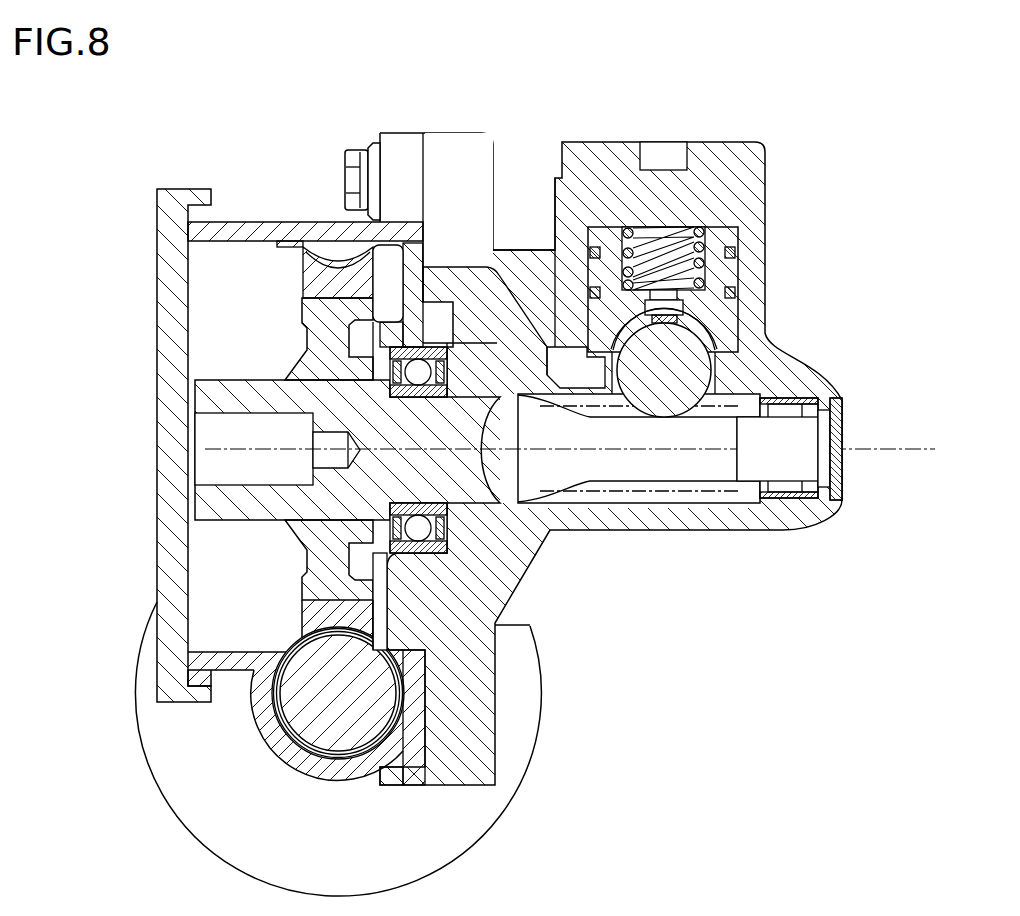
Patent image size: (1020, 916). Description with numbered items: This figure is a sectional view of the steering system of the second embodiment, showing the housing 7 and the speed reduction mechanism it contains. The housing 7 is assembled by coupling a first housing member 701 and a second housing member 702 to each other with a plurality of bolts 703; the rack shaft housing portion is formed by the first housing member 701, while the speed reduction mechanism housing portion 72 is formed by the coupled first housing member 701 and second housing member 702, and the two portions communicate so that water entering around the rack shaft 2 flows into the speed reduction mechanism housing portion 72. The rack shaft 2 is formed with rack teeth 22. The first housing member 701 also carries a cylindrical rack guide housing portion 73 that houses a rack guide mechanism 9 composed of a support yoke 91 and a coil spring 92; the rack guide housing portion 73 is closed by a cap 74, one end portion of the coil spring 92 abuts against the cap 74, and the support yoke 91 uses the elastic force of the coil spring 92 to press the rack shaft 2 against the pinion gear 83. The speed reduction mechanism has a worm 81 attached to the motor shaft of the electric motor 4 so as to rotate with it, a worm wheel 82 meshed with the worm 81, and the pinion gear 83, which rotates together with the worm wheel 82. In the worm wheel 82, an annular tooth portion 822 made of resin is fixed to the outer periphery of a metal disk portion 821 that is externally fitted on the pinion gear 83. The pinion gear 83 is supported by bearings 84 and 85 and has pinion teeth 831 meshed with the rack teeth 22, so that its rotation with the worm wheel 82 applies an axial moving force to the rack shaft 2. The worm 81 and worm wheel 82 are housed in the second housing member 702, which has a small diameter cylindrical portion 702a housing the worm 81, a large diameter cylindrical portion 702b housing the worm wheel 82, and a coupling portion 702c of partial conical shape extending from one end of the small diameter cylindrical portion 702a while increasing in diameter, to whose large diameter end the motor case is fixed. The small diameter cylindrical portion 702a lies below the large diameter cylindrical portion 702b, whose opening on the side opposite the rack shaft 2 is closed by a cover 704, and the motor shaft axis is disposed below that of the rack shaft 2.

The rack shaft 2 is at (700, 377).
The rack teeth 22 is at (718, 392).
The electric motor 4 is at (508, 805).
The housing 7 is at (855, 498).
The first housing member 701 is at (843, 412).
The second housing member 702 is at (228, 752).
The small diameter cylindrical portion 702a is at (282, 747).
The large diameter cylindrical portion 702b is at (248, 663).
The coupling portion 702c is at (232, 837).
The bolts 703 is at (357, 157).
The cover 704 is at (173, 452).
The speed reduction mechanism housing portion 72 is at (553, 543).
The rack guide housing portion 73 is at (784, 170).
The cap 74 is at (720, 152).
The worm 81 is at (278, 648).
The worm wheel 82 is at (232, 503).
The disk portion 821 is at (305, 340).
The annular tooth portion 822 is at (298, 287).
The pinion gear 83 is at (207, 398).
The pinion teeth 831 is at (655, 495).
The bearing 84 is at (413, 503).
The bearing 85 is at (787, 490).
The rack guide mechanism 9 is at (730, 279).
The support yoke 91 is at (720, 320).
The coil spring 92 is at (693, 233).